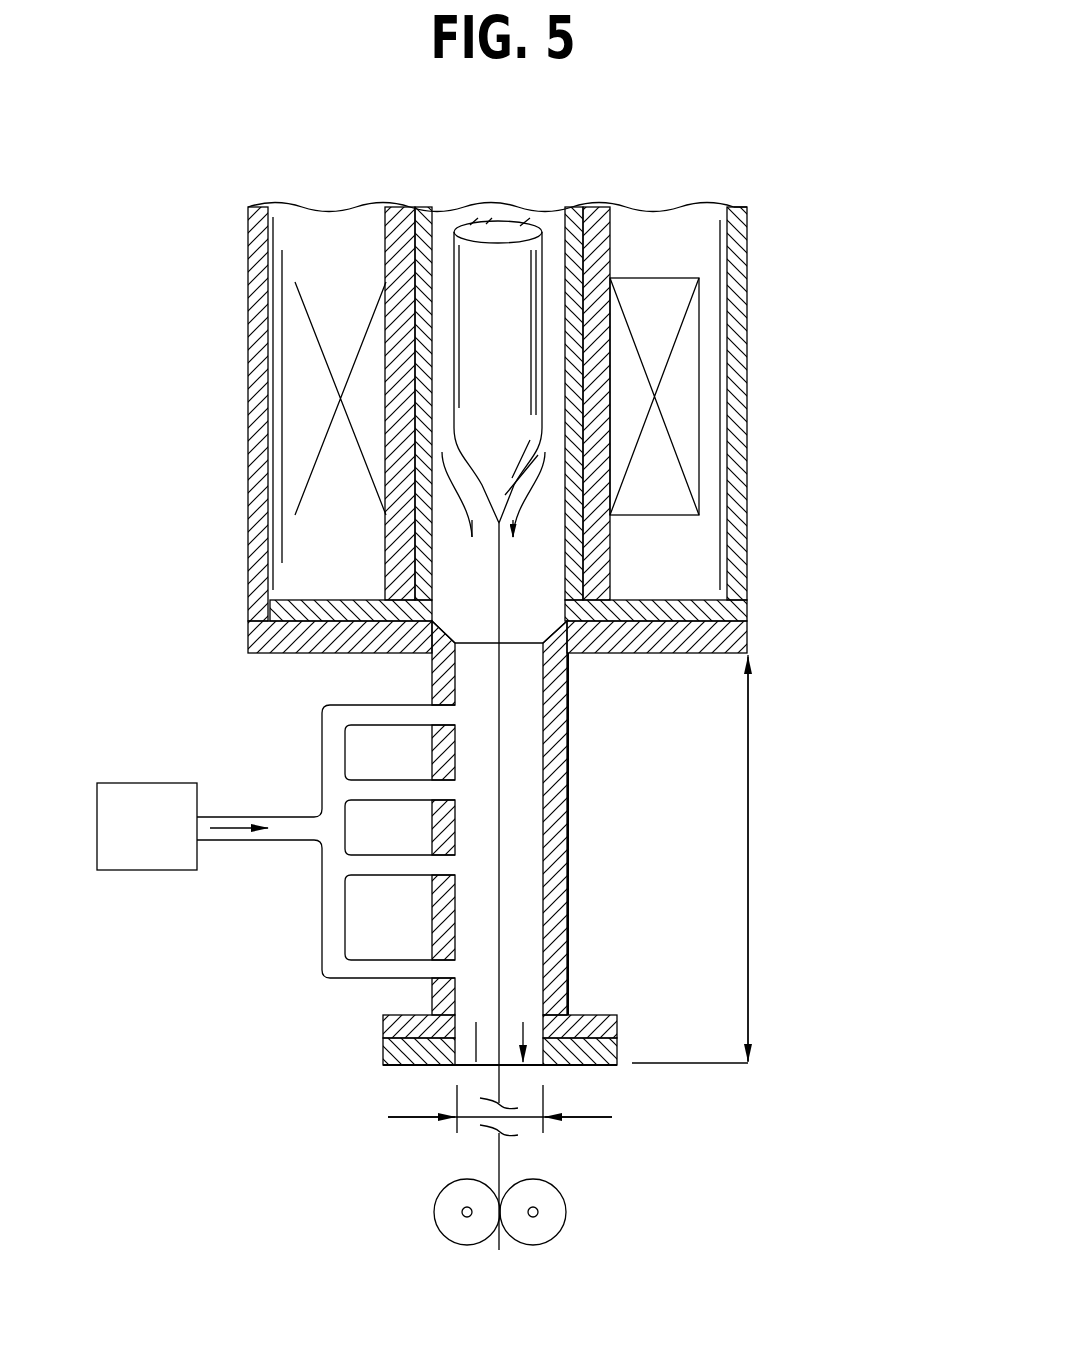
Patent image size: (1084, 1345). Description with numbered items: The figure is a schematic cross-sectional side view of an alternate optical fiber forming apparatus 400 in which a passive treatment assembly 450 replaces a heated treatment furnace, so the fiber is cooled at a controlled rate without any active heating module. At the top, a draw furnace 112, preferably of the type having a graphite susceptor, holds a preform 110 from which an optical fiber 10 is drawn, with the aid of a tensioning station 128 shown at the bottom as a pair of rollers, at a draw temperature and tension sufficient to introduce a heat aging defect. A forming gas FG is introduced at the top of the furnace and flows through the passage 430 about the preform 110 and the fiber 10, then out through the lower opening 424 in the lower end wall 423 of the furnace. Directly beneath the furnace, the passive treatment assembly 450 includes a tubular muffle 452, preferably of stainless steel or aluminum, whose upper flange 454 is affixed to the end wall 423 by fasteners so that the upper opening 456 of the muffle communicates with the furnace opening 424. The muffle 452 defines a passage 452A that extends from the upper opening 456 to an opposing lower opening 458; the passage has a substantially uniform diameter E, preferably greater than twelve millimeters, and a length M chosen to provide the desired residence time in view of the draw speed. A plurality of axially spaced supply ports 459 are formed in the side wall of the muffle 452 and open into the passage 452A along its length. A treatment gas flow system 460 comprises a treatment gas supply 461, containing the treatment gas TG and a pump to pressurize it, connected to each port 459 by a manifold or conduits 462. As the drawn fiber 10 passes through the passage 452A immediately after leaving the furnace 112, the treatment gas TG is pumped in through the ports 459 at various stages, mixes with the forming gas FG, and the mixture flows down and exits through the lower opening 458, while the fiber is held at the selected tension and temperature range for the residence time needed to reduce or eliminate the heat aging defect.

The optical fiber forming apparatus 400 is at (820, 160).
The draw furnace 112 is at (752, 458).
The preform 110 is at (480, 328).
The passage 430 is at (543, 316).
The optical fiber 10 is at (497, 548).
The lower opening 424 is at (529, 577).
The lower end wall 423 is at (735, 607).
The upper flange 454 is at (725, 637).
The upper opening 456 is at (488, 638).
The tubular muffle 452 is at (568, 822).
The passage 452A is at (568, 925).
The passive treatment assembly 450 is at (589, 840).
The supply ports 459 is at (432, 716).
The manifold or conduits 462 is at (322, 882).
The treatment gas flow system 460 is at (251, 784).
The treatment gas supply 461 is at (120, 872).
The lower opening 458 is at (536, 1068).
The tensioning station 128 is at (569, 1200).
The forming gas FG is at (551, 237).
The treatment gas TG is at (458, 722).
The length of the passage M is at (748, 866).
The diameter of the passage E is at (407, 1118).